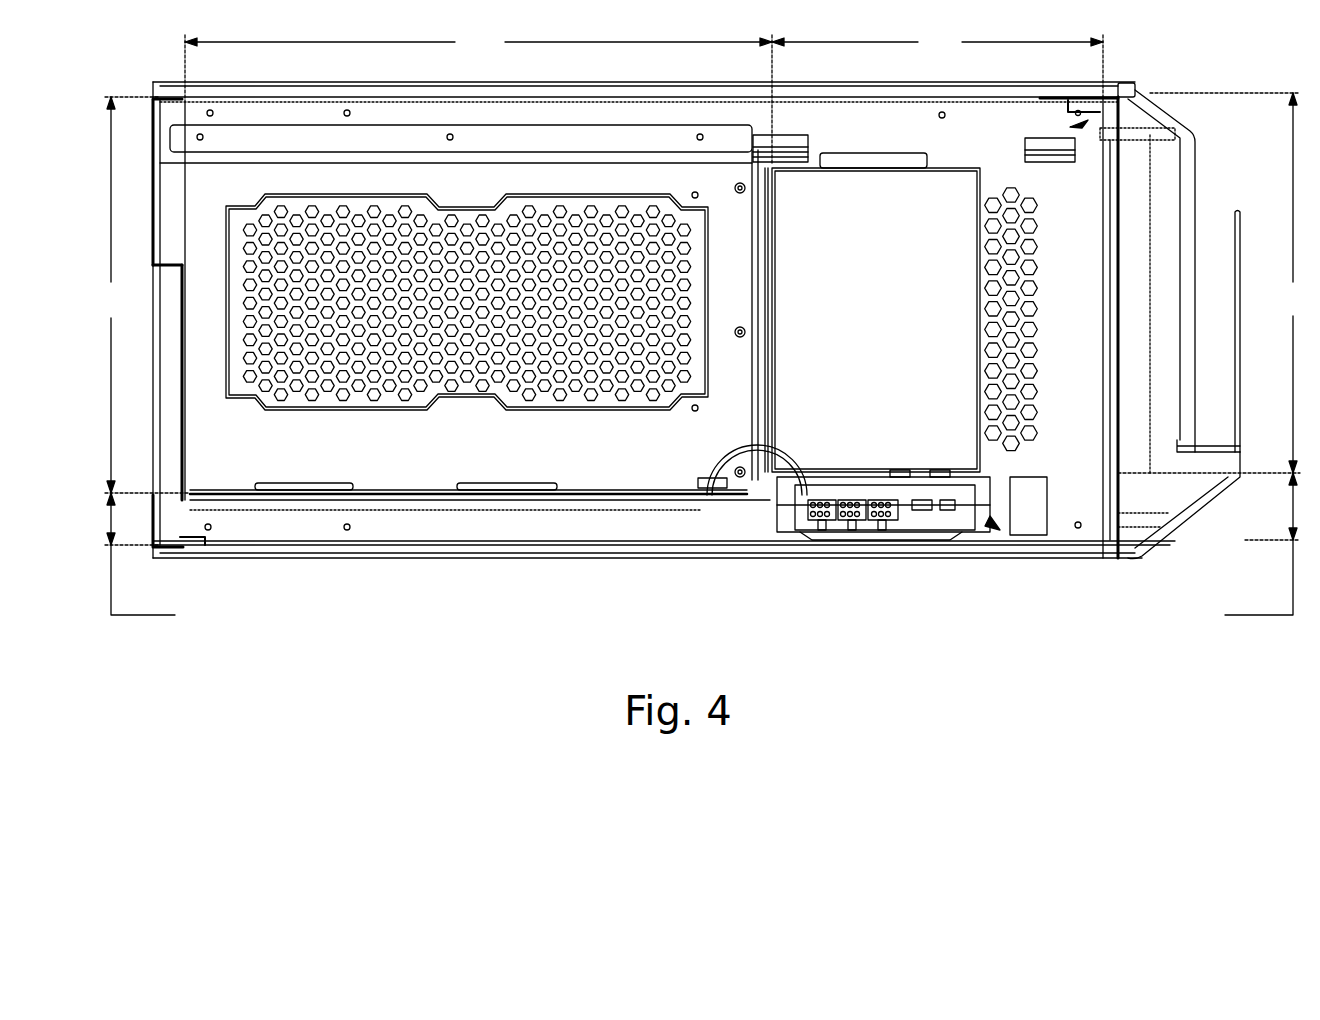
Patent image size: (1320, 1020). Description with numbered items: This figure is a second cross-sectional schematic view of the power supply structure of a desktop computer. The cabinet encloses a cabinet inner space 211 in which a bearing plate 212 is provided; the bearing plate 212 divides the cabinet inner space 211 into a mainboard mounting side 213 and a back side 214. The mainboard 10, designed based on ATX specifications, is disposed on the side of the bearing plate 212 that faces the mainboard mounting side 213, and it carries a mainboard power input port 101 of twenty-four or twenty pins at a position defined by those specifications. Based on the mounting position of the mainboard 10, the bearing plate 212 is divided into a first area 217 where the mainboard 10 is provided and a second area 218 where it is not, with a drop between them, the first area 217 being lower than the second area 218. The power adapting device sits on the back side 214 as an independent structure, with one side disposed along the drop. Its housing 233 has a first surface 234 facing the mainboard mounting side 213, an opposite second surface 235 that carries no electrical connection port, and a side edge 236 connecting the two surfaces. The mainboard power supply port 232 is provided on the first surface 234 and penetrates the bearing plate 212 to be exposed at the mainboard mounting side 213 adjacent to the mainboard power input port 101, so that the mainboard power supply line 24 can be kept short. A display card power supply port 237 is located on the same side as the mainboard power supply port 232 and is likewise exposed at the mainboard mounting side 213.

The mainboard 10 is at (335, 497).
The mainboard power input port 101 is at (708, 486).
The mainboard power supply line 24 is at (752, 505).
The cabinet inner space 211 is at (1118, 94).
The bearing plate 212 is at (553, 502).
The mainboard mounting side 213 is at (701, 293).
The back side 214 is at (702, 544).
The first area 217 is at (478, 97).
The second area 218 is at (937, 65).
The mainboard power supply port 232 is at (838, 508).
The housing 233 is at (777, 502).
The first surface 234 is at (1023, 474).
The second surface 235 is at (965, 537).
The side edge 236 is at (1012, 506).
The display card power supply port 237 is at (915, 508).